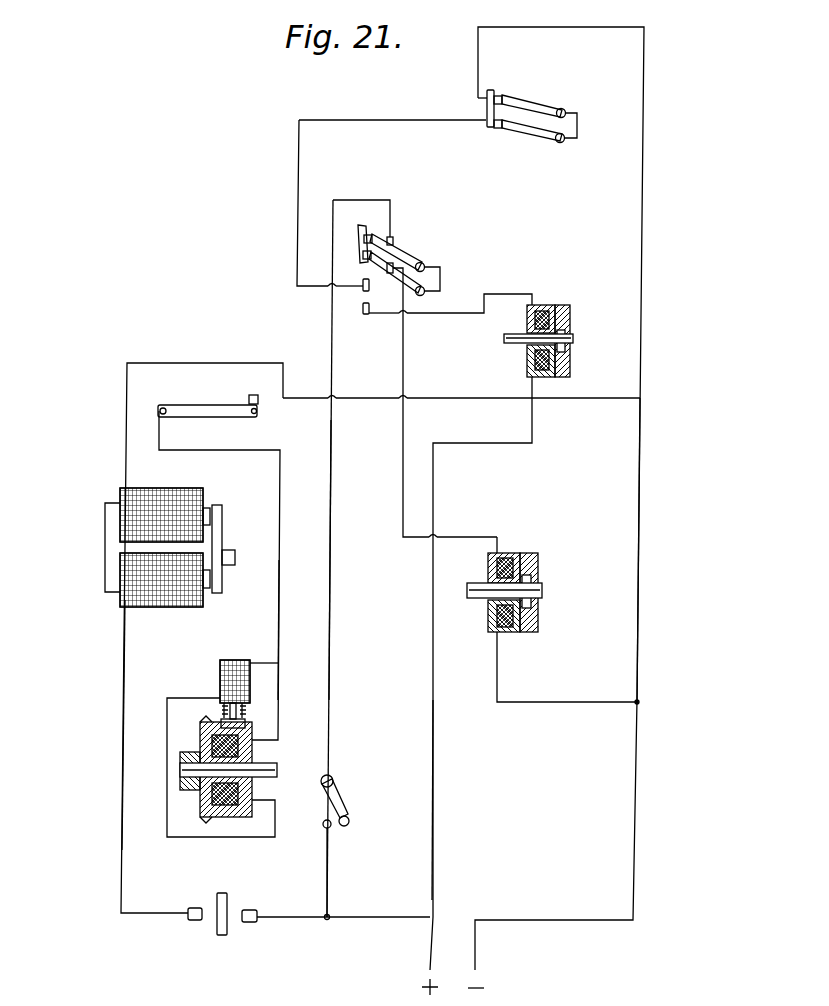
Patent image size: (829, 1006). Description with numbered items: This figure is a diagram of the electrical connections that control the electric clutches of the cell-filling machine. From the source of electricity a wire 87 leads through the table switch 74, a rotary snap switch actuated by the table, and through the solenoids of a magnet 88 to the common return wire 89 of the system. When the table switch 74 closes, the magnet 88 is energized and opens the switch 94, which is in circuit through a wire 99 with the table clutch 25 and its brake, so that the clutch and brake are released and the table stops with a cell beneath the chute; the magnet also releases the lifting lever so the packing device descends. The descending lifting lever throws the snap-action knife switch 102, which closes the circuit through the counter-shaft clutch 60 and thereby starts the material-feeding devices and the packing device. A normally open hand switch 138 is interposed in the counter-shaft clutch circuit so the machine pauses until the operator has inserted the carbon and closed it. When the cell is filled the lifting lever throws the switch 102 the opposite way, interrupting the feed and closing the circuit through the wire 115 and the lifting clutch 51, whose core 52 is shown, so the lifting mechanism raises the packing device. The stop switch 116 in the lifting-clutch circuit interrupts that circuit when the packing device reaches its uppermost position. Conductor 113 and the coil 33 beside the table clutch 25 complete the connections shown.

The stop switch 116 is at (529, 108).
The feed-controlling switch 102 is at (399, 266).
The lifting clutch 51 is at (565, 333).
The solenoid core 52 is at (570, 362).
The switch arm 94 is at (208, 395).
The magnet 88 is at (149, 547).
The magnet coil with armature 33 is at (246, 722).
The table clutch 25 is at (228, 778).
The hand switch 138 is at (340, 795).
The counter-shaft clutch 60 is at (525, 584).
The table switch 74 is at (217, 928).
The common return wire 89 is at (640, 480).
The conductor 113 is at (330, 563).
The wire 99 is at (278, 627).
The wire 87 is at (122, 730).
The wire 115 is at (431, 775).